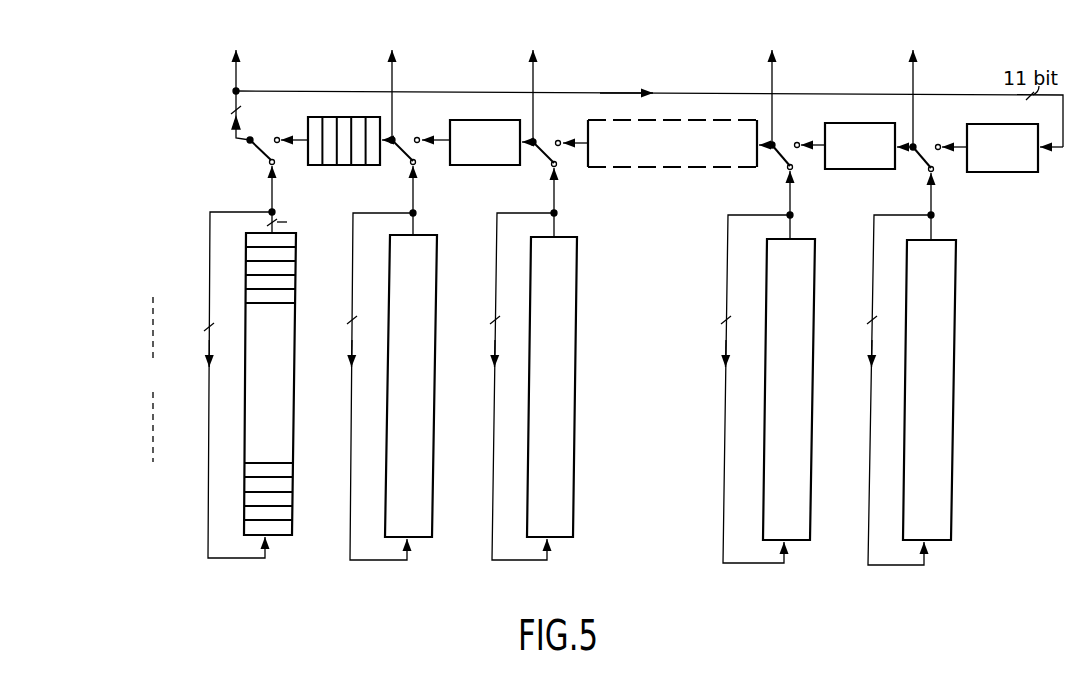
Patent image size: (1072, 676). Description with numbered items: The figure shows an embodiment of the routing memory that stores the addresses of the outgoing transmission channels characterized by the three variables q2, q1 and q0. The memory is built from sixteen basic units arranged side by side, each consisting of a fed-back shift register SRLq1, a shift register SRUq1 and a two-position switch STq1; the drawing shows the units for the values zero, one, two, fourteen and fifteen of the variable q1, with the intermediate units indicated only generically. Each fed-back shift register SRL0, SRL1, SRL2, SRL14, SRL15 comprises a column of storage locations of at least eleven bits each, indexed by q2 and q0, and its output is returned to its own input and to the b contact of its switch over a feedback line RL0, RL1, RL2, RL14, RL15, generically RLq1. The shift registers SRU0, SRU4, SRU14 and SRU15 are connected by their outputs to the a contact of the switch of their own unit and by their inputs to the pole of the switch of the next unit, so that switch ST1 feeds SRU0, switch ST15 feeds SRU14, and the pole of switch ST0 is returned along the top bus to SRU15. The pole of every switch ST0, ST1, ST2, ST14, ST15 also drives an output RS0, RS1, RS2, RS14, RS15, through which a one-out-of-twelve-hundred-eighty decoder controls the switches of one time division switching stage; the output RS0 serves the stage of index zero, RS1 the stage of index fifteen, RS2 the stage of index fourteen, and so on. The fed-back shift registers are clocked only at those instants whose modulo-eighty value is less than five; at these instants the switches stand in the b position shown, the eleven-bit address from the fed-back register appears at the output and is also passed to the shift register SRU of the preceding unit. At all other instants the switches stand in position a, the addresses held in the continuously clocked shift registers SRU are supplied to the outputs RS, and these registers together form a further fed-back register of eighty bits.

The output RS0 is at (236, 70).
The output RS1 is at (392, 72).
The output RS2 is at (533, 72).
The output RS14 is at (772, 74).
The output RS15 is at (913, 74).
The two-position switch ST0 is at (252, 146).
The two-position switch ST1 is at (405, 137).
The two-position switch ST2 is at (545, 139).
The two-position switch ST14 is at (783, 141).
The two-position switch ST15 is at (924, 143).
The feedback line RL0 is at (301, 199).
The feedback line RL1 is at (428, 200).
The feedback line RL2 is at (569, 202).
The feedback line RL14 is at (809, 205).
The feedback line RL15 is at (951, 206).
The feedback line RLq1 is at (717, 195).
The shift register SRU0 is at (330, 157).
The shift register SRU4 is at (472, 158).
The shift register SRU14 is at (852, 162).
The shift register SRU15 is at (1005, 163).
The fed-back shift register SRL0 is at (293, 414).
The fed-back shift register SRL1 is at (433, 413).
The fed-back shift register SRL2 is at (574, 415).
The fed-back shift register SRL14 is at (812, 418).
The fed-back shift register SRL15 is at (953, 418).
The fed-back shift register SRLq1 is at (610, 538).
The variable q0 is at (186, 391).
The variable q1 is at (733, 72).
The variable q2 is at (152, 383).